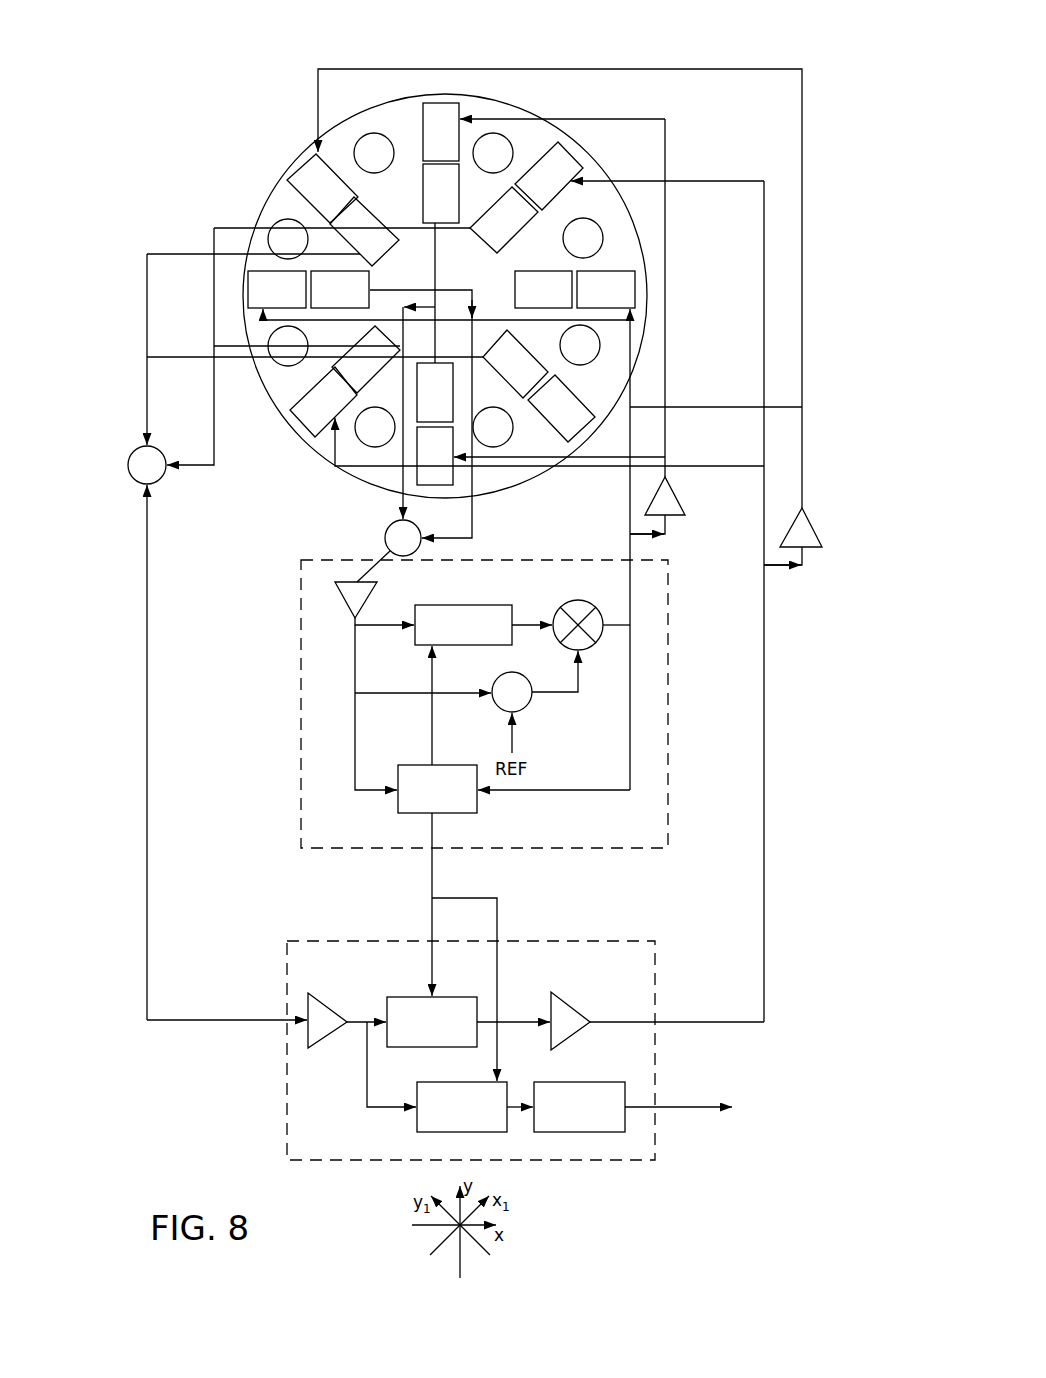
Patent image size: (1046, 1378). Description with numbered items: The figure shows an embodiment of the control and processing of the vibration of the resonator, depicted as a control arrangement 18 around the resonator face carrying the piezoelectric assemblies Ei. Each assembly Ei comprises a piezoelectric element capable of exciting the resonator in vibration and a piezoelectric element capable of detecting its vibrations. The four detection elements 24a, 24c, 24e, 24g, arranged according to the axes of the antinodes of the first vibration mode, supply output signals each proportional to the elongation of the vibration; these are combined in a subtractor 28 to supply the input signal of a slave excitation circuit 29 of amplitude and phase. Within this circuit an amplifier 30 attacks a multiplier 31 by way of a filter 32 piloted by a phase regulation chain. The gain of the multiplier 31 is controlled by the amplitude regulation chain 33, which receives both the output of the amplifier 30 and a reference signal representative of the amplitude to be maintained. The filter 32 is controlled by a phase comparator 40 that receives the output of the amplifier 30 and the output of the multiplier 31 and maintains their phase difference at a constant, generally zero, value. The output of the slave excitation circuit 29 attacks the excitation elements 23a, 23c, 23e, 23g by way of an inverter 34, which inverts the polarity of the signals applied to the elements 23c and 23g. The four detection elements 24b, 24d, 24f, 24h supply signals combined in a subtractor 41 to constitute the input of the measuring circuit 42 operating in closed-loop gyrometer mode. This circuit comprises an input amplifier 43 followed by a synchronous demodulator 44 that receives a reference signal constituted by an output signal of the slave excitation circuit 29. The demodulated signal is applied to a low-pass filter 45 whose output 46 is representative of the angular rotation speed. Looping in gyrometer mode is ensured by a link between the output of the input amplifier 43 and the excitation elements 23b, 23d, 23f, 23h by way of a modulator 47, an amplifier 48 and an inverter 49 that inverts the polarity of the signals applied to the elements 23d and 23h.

The vibration gyroscope control circuit 18 is at (133, 1029).
The piezoelectric element 23a is at (633, 269).
The piezoelectric element 23b is at (536, 185).
The piezoelectric element 23c is at (428, 138).
The piezoelectric element 23d is at (309, 198).
The piezoelectric element 23e is at (257, 269).
The piezoelectric element 23f is at (311, 411).
The piezoelectric element 23g is at (422, 463).
The piezoelectric element 23h is at (549, 418).
The piezoelectric element 24a is at (557, 269).
The piezoelectric element 24b is at (491, 229).
The piezoelectric element 24c is at (428, 202).
The piezoelectric element 24d is at (352, 241).
The piezoelectric element 24e is at (330, 269).
The piezoelectric element 24f is at (354, 369).
The piezoelectric element 24g is at (422, 400).
The piezoelectric element 24h is at (503, 373).
The piezoelectric assembly Ei is at (637, 290).
The subtractor 28 is at (384, 537).
The slave excitation circuit 29 is at (298, 704).
The amplifier 30 is at (341, 617).
The multiplier 31 is at (609, 612).
The filter 32 is at (468, 603).
The amplitude regulation chain 33 is at (531, 703).
The inverter 34 is at (679, 496).
The phase comparator 40 is at (394, 812).
The subtractor 41 is at (133, 452).
The measuring circuit 42 is at (285, 1093).
The input amplifier 43 is at (306, 998).
The synchronous demodulator 44 is at (430, 1134).
The low-pass filter 45 is at (593, 1134).
The output 46 is at (695, 1102).
The modulator 47 is at (400, 995).
The amplifier 48 is at (573, 1008).
The inverter 49 is at (813, 522).